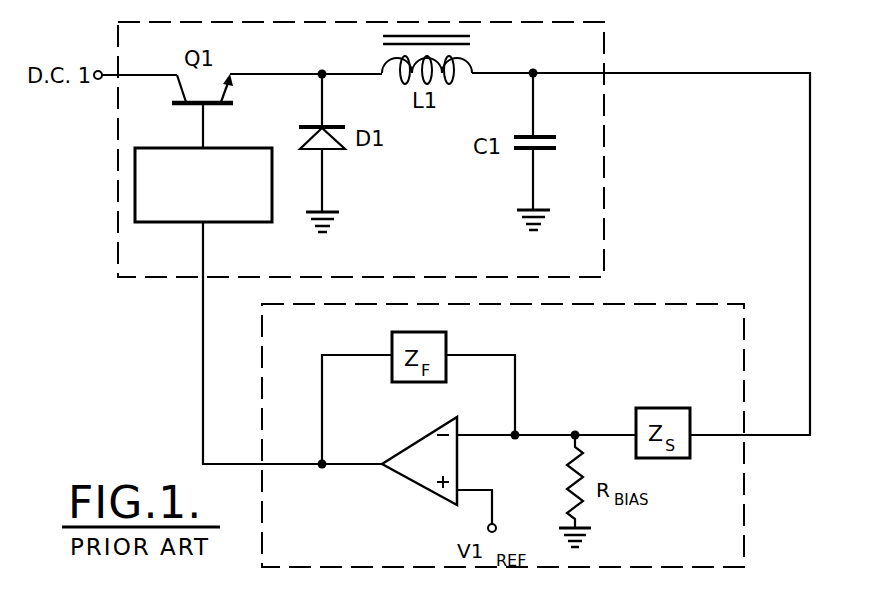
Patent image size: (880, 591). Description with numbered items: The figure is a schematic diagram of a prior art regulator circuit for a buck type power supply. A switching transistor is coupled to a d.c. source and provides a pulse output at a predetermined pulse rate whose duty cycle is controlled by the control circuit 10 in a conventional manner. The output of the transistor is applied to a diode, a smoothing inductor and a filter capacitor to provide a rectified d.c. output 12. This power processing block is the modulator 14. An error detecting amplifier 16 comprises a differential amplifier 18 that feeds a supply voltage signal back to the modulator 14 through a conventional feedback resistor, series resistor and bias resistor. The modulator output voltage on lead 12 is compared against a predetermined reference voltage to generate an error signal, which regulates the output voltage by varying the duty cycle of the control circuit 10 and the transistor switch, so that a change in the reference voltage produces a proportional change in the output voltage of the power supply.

The control circuit 10 is at (135, 188).
The rectified d.c. output 12 is at (683, 73).
The modulator 14 is at (604, 172).
The error detecting amplifier 16 is at (745, 508).
The differential amplifier 18 is at (412, 487).